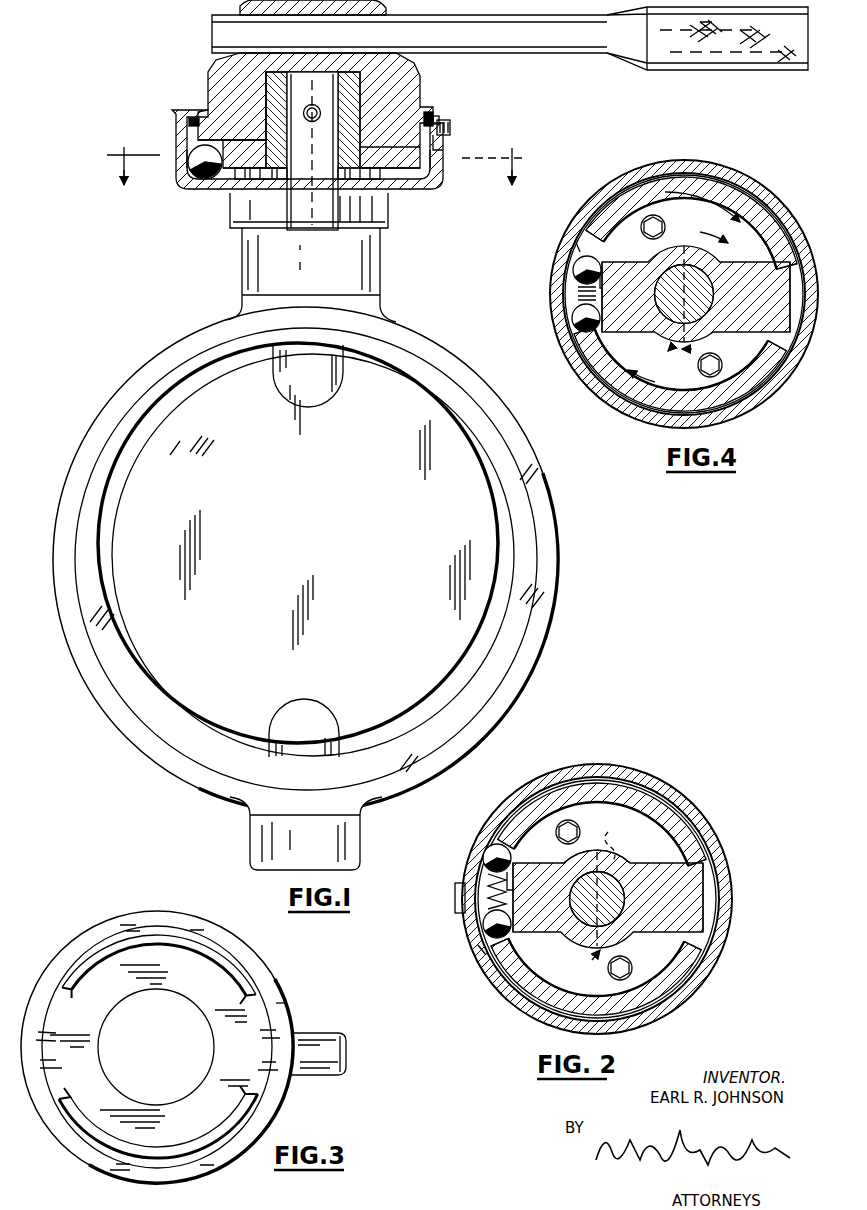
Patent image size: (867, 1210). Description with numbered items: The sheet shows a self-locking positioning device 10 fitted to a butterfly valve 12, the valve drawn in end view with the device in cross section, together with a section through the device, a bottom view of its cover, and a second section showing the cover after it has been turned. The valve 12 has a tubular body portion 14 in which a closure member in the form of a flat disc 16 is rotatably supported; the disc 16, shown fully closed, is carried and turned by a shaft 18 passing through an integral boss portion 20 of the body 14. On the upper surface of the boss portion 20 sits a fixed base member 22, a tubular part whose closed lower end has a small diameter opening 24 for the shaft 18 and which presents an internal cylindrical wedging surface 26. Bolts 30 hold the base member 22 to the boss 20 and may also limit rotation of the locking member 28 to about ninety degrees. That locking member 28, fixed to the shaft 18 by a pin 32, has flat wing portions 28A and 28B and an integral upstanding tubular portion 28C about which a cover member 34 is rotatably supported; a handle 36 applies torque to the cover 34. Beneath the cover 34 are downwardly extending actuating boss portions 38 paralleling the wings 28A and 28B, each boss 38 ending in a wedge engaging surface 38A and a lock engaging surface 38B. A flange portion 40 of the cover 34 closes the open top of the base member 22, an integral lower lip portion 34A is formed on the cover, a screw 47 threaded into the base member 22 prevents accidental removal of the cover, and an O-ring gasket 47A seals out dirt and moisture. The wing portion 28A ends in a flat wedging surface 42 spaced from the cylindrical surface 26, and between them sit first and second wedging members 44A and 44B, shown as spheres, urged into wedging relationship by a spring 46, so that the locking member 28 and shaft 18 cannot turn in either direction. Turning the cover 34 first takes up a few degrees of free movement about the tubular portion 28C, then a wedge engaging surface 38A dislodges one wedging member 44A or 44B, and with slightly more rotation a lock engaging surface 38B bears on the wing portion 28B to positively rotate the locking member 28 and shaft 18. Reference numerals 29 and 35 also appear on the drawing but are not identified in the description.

In FIG. 1, the self-locking positioning device 10 is at (95, 58).
In FIG. 1, the butterfly valve 12 is at (84, 352).
In FIG. 1, the tubular body portion 14 is at (92, 445).
In FIG. 1, the flat disc 16 is at (270, 516).
In FIG. 1, the shaft 18 is at (305, 170).
In FIG. 4, the shaft 18 is at (714, 296).
In FIG. 2, the shaft 18 is at (618, 905).
In FIG. 1, the integral boss portion 20 is at (248, 268).
In FIG. 1, the fixed base member 22 is at (196, 190).
In FIG. 4, the fixed base member 22 is at (572, 242).
In FIG. 2, the fixed base member 22 is at (500, 985).
In FIG. 1, the small diameter opening 24 is at (280, 198).
In FIG. 1, the internal cylindrical wedging surface 26 is at (188, 133).
In FIG. 4, the internal cylindrical wedging surface 26 is at (572, 246).
In FIG. 2, the internal cylindrical wedging surface 26 is at (480, 950).
In FIG. 1, the locking member 28 is at (360, 142).
In FIG. 4, the locking member 28 is at (672, 350).
In FIG. 2, the locking member 28 is at (608, 911).
In FIG. 1, the wing portion 28A is at (232, 124).
In FIG. 4, the wing portion 28A is at (648, 332).
In FIG. 2, the wing portion 28A is at (553, 932).
In FIG. 1, the wing portion 28B is at (392, 165).
In FIG. 4, the wing portion 28B is at (760, 332).
In FIG. 2, the wing portion 28B is at (676, 932).
In FIG. 1, the upstanding tubular portion 28C is at (350, 102).
In FIG. 2, the upstanding tubular portion 28C is at (572, 862).
In FIG. 1, the spacer washer 29 is at (287, 157).
In FIG. 1, the bolts 30 is at (240, 188).
In FIG. 4, the bolts 30 is at (666, 225).
In FIG. 2, the bolts 30 is at (578, 826).
In FIG. 1, the pin 32 is at (312, 122).
In FIG. 2, the pin 32 is at (618, 842).
In FIG. 1, the cover member 34 is at (405, 86).
In FIG. 1, the lower lip portion 34A is at (440, 150).
In FIG. 3, the lower lip portion 34A is at (162, 930).
In FIG. 1, the central bore 35 is at (270, 90).
In FIG. 3, the central bore 35 is at (204, 1064).
In FIG. 3, the handle 36 is at (316, 1036).
In FIG. 1, the actuating boss portions 38 is at (187, 160).
In FIG. 4, the actuating boss portions 38 is at (764, 228).
In FIG. 2, the actuating boss portions 38 is at (672, 826).
In FIG. 3, the actuating boss portions 38 is at (222, 958).
In FIG. 4, the wedge engaging surface 38A is at (584, 232).
In FIG. 2, the wedge engaging surface 38A is at (496, 843).
In FIG. 3, the wedge engaging surface 38A is at (66, 990).
In FIG. 4, the lock engaging surface 38B is at (790, 262).
In FIG. 2, the lock engaging surface 38B is at (690, 862).
In FIG. 3, the lock engaging surface 38B is at (248, 1002).
In FIG. 1, the flange portion 40 is at (436, 112).
In FIG. 3, the flange portion 40 is at (278, 1003).
In FIG. 4, the flat wedging surface 42 is at (604, 272).
In FIG. 2, the flat wedging surface 42 is at (512, 892).
In FIG. 1, the first wedging member 44A is at (190, 178).
In FIG. 4, the first wedging member 44A is at (578, 270).
In FIG. 2, the first wedging member 44A is at (488, 856).
In FIG. 4, the second wedging member 44B is at (578, 322).
In FIG. 2, the second wedging member 44B is at (488, 928).
In FIG. 4, the spring 46 is at (580, 295).
In FIG. 2, the spring 46 is at (488, 888).
In FIG. 1, the screw 47 is at (452, 128).
In FIG. 1, the O-ring gasket 47A is at (442, 120).